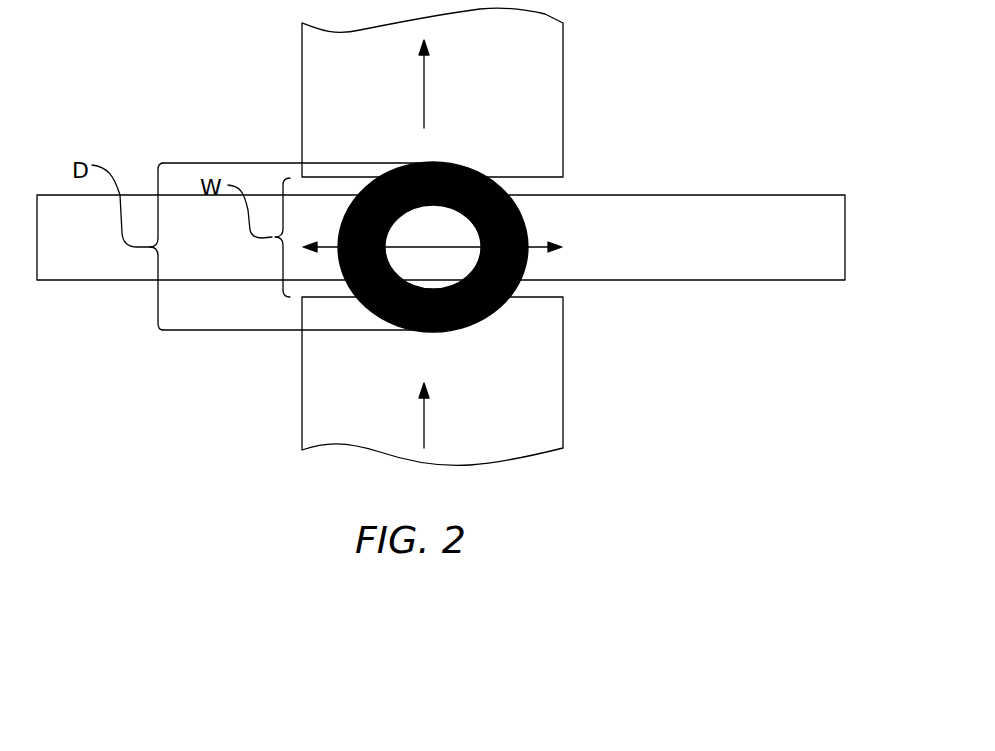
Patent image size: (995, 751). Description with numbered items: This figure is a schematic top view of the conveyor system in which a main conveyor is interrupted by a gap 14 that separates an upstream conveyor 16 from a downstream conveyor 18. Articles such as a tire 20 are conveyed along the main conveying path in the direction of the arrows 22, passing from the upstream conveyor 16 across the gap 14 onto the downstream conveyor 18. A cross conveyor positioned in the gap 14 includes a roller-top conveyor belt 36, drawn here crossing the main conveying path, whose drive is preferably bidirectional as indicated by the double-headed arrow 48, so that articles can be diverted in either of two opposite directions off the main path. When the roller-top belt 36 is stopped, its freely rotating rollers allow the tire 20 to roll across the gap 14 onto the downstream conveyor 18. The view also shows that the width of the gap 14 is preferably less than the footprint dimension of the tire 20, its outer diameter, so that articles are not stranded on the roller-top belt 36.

The gap 14 is at (570, 188).
The upstream conveyor 16 is at (563, 424).
The downstream conveyor 18 is at (563, 68).
The tire 20 is at (503, 307).
The arrows 22 is at (424, 87).
The roller-top conveyor belt 36 is at (703, 200).
The double-headed arrow 48 is at (542, 248).